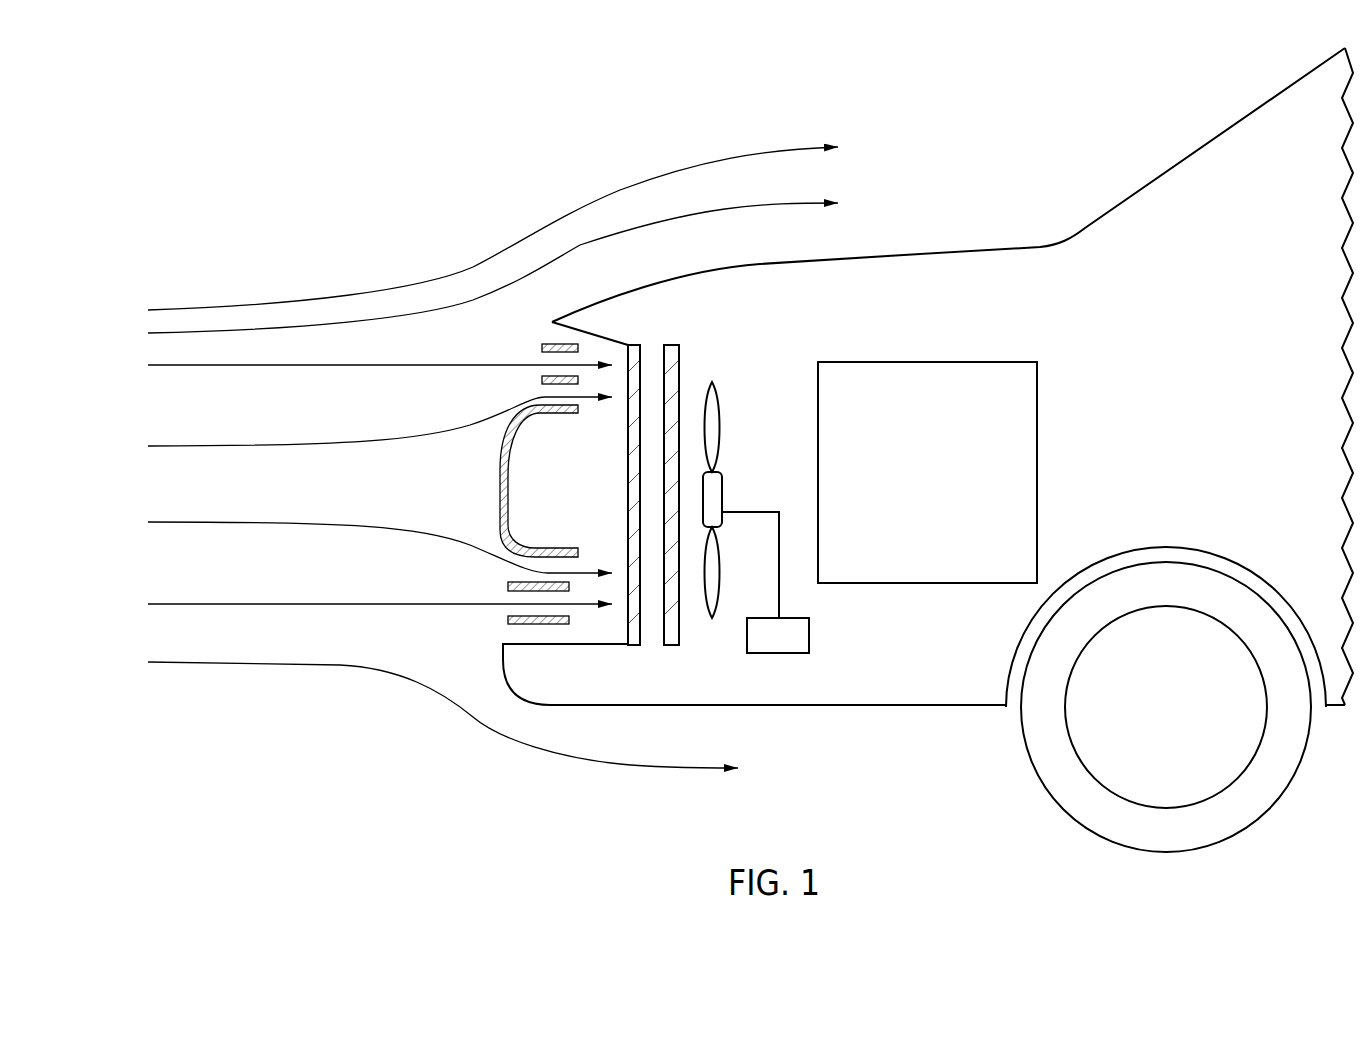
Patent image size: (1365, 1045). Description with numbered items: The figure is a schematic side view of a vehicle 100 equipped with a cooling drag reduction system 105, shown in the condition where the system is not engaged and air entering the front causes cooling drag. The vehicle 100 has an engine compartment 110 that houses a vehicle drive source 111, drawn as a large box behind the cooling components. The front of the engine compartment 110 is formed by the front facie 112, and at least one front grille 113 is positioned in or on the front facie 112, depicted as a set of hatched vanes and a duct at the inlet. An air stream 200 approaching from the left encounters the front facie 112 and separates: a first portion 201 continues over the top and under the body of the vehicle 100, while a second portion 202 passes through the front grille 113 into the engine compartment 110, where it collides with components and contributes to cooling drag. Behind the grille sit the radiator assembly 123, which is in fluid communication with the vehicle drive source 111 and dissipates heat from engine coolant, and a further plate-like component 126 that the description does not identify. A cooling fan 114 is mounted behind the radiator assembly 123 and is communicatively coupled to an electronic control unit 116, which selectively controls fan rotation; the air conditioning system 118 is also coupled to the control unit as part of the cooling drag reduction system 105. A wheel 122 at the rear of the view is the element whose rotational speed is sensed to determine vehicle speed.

The vehicle 100 is at (1113, 132).
The cooling drag reduction system 105 is at (832, 673).
The engine compartment 110 is at (1066, 352).
The vehicle drive source 111 is at (1037, 485).
The front facie 112 is at (556, 312).
The front grille 113 is at (541, 347).
The cooling fan 114 is at (724, 497).
The electronic control unit 116 is at (809, 632).
The air conditioning system 118 is at (618, 650).
The wheel 122 is at (1228, 583).
The radiator assembly 123 is at (679, 365).
The condenser 126 is at (645, 365).
The air stream 200 is at (274, 290).
The first portion of the air stream 201 is at (682, 162).
The second portion of the air stream 202 is at (457, 364).